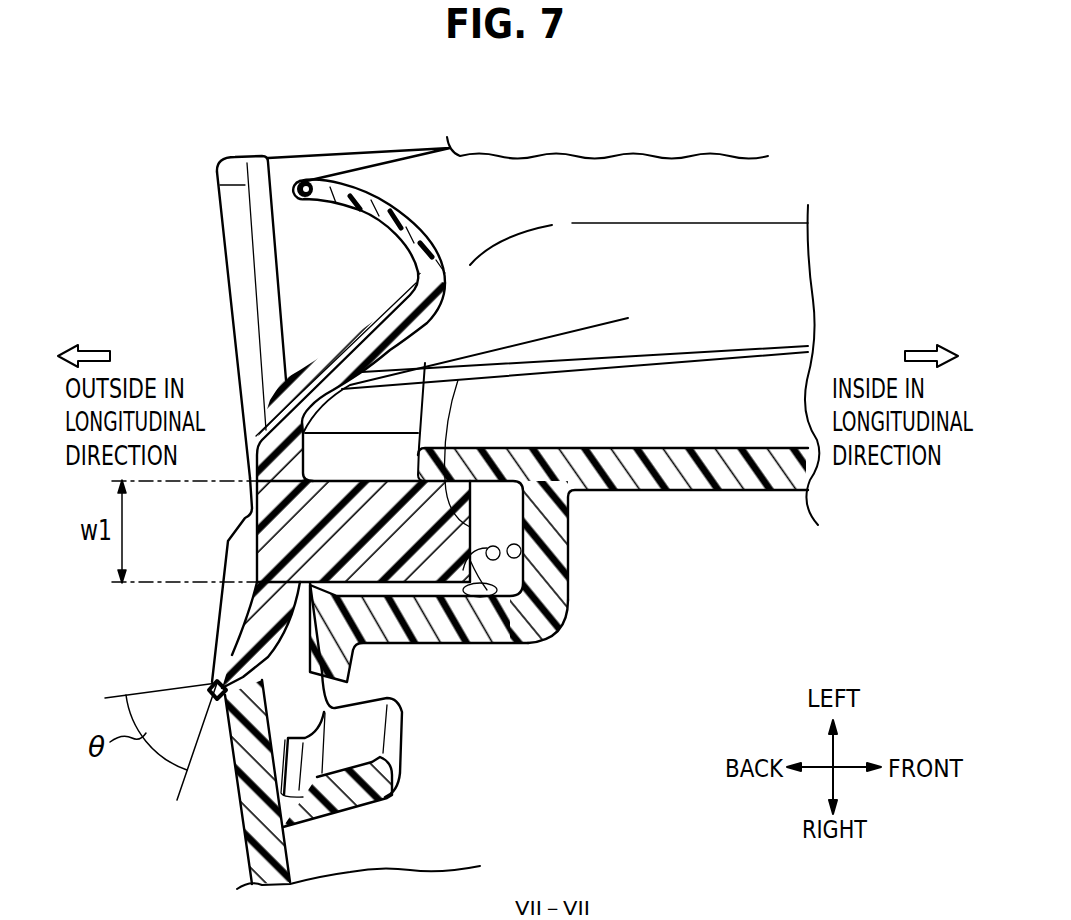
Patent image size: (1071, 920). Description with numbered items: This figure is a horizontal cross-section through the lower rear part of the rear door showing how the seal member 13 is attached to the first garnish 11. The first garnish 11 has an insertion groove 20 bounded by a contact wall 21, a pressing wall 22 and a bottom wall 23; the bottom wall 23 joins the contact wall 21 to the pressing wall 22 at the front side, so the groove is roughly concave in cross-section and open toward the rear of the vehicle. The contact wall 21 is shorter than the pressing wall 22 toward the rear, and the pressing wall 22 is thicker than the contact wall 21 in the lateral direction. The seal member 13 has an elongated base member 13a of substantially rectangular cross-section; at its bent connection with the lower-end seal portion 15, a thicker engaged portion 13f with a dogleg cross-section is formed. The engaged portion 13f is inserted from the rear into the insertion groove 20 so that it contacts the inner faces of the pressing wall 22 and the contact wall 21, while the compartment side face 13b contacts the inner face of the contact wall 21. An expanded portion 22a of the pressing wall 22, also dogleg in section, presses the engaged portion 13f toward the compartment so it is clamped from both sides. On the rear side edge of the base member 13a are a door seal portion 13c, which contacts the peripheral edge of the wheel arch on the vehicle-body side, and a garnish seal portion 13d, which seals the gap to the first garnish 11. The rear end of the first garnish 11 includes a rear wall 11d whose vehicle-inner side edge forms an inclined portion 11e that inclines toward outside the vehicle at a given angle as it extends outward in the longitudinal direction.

The first garnish 11 is at (764, 497).
The rear wall 11d is at (218, 727).
The inclined portion 11e is at (212, 682).
The seal member 13 is at (233, 516).
The base member 13a is at (383, 460).
The compartment side face 13b is at (458, 380).
The door seal portion 13c is at (372, 205).
The garnish seal portion 13d is at (215, 702).
The engaged portion 13f is at (434, 606).
The lower-end seal portion 15 is at (710, 250).
The insertion groove 20 is at (574, 488).
The contact wall 21 is at (505, 524).
The pressing wall 22 is at (652, 591).
The expanded portion 22a is at (549, 632).
The bottom wall 23 is at (485, 597).